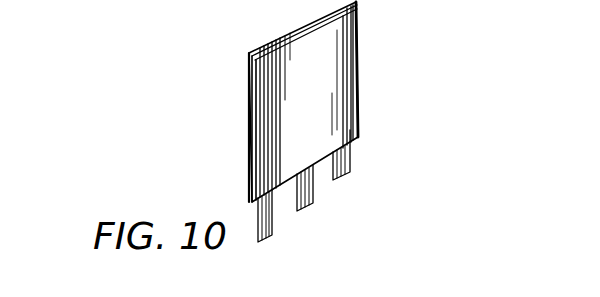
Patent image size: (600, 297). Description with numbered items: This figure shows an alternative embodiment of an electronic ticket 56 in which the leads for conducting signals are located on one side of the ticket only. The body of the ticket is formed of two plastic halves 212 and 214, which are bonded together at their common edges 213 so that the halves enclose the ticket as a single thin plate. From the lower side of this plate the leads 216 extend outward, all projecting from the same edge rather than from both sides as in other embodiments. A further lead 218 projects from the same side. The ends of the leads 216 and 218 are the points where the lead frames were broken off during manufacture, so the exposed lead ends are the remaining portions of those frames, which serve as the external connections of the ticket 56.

The electronic ticket 56 is at (388, 44).
The plastic half 212 is at (342, 98).
The common edges 213 is at (254, 80).
The plastic half 214 is at (251, 110).
The leads 216 is at (273, 227).
The lead 218 is at (268, 237).